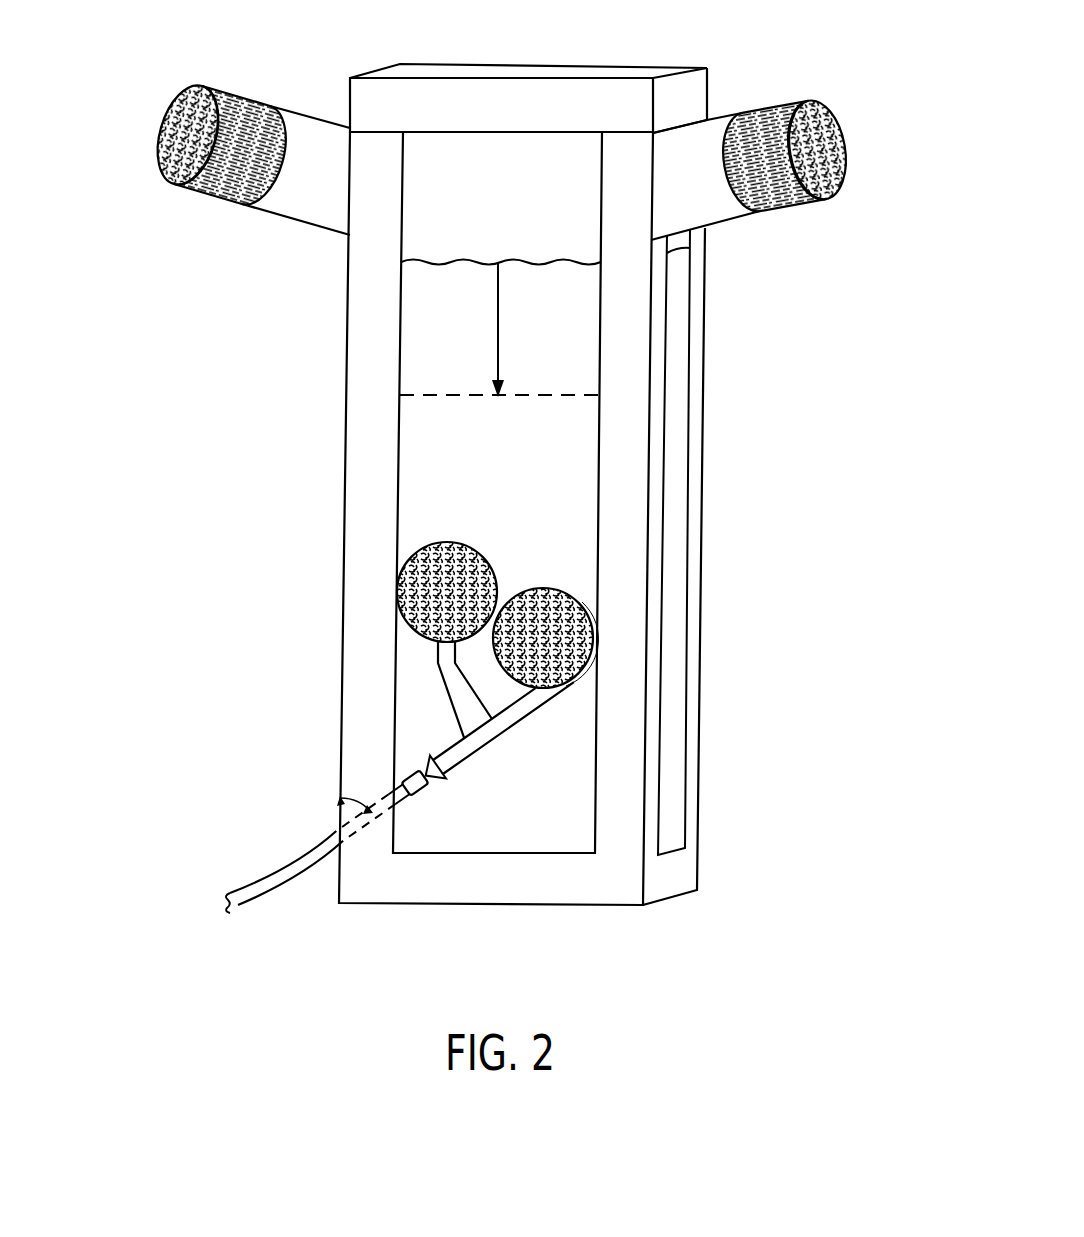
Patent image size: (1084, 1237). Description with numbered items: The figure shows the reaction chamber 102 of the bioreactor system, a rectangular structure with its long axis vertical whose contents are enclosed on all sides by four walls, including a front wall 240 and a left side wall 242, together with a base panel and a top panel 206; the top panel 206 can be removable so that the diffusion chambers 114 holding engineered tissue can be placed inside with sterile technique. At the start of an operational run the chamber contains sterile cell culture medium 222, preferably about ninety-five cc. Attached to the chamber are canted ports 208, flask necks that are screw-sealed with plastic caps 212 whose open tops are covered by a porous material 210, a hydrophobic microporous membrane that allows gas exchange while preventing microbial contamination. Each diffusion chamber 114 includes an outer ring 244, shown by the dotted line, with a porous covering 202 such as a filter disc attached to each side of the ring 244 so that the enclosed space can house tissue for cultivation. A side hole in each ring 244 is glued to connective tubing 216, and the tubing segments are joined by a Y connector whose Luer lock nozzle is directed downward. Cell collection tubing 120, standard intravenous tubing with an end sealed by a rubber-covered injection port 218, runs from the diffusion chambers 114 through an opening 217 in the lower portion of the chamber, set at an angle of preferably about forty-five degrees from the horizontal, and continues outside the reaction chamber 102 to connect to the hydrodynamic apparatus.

The reaction chamber 102 is at (542, 44).
The top panel 206 is at (633, 75).
The porous material 210 is at (172, 142).
The caps 212 is at (218, 183).
The canted ports 208 is at (283, 205).
The porous covering 202 is at (498, 328).
The cell culture medium 222 is at (555, 462).
The diffusion chambers 114 is at (550, 641).
The outer ring 244 is at (571, 680).
The left side wall 242 is at (688, 800).
The connective tubing 216 is at (452, 682).
The rubber-covered injection port 218 is at (437, 770).
The opening 217 is at (340, 838).
The cell collection tubing 120 is at (287, 897).
The front wall 240 is at (498, 888).